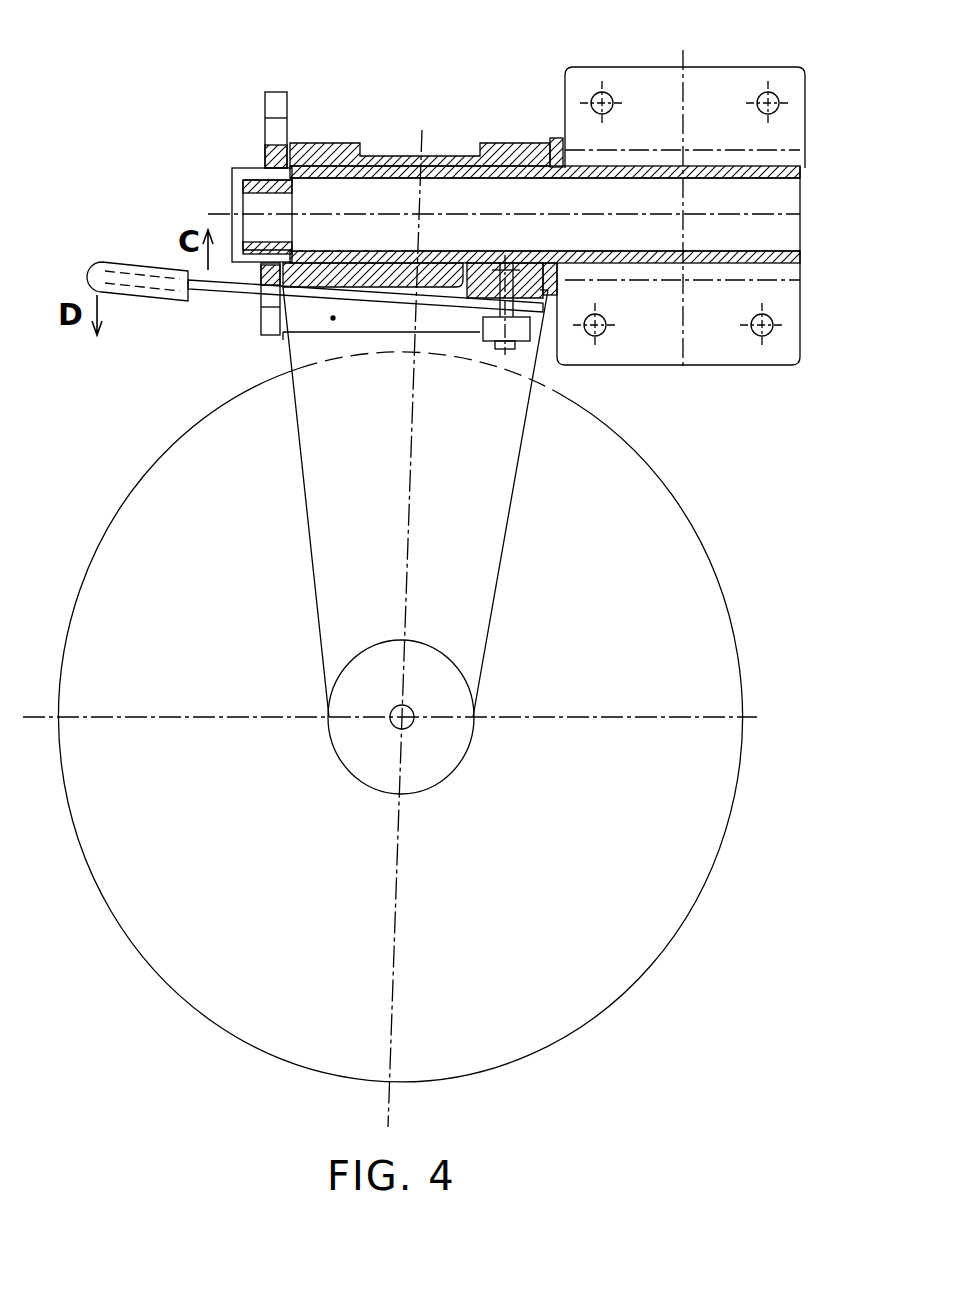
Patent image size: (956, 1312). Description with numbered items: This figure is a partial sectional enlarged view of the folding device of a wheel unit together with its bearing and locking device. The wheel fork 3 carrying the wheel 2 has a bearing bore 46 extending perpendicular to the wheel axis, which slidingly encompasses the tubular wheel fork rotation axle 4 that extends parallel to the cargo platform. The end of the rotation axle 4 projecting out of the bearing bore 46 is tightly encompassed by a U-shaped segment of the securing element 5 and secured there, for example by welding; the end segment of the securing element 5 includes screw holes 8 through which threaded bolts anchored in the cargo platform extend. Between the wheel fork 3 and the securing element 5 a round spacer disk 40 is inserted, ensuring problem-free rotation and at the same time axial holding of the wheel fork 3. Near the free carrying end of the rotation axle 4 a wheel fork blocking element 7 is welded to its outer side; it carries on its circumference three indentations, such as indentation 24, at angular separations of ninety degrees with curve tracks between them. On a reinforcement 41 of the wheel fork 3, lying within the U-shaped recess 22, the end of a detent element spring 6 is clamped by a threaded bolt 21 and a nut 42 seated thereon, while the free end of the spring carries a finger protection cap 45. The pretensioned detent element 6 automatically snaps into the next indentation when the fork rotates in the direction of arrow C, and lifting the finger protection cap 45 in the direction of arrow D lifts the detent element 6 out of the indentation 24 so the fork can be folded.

The wheel 2 is at (126, 500).
The wheel fork 3 is at (300, 488).
The wheel fork rotation axle 4 is at (258, 168).
The securing element 5 is at (796, 138).
The detent element spring 6 is at (333, 318).
The wheel fork blocking element 7 is at (240, 283).
The screw holes 8 is at (608, 98).
The threaded bolt 21 is at (540, 292).
The U-shaped recess 22 is at (312, 333).
The indentation 24 is at (268, 305).
The spacer disk 40 is at (552, 140).
The reinforcement 41 is at (483, 283).
The nut 42 is at (528, 280).
The finger protection cap 45 is at (118, 262).
The bearing bore 46 is at (372, 256).